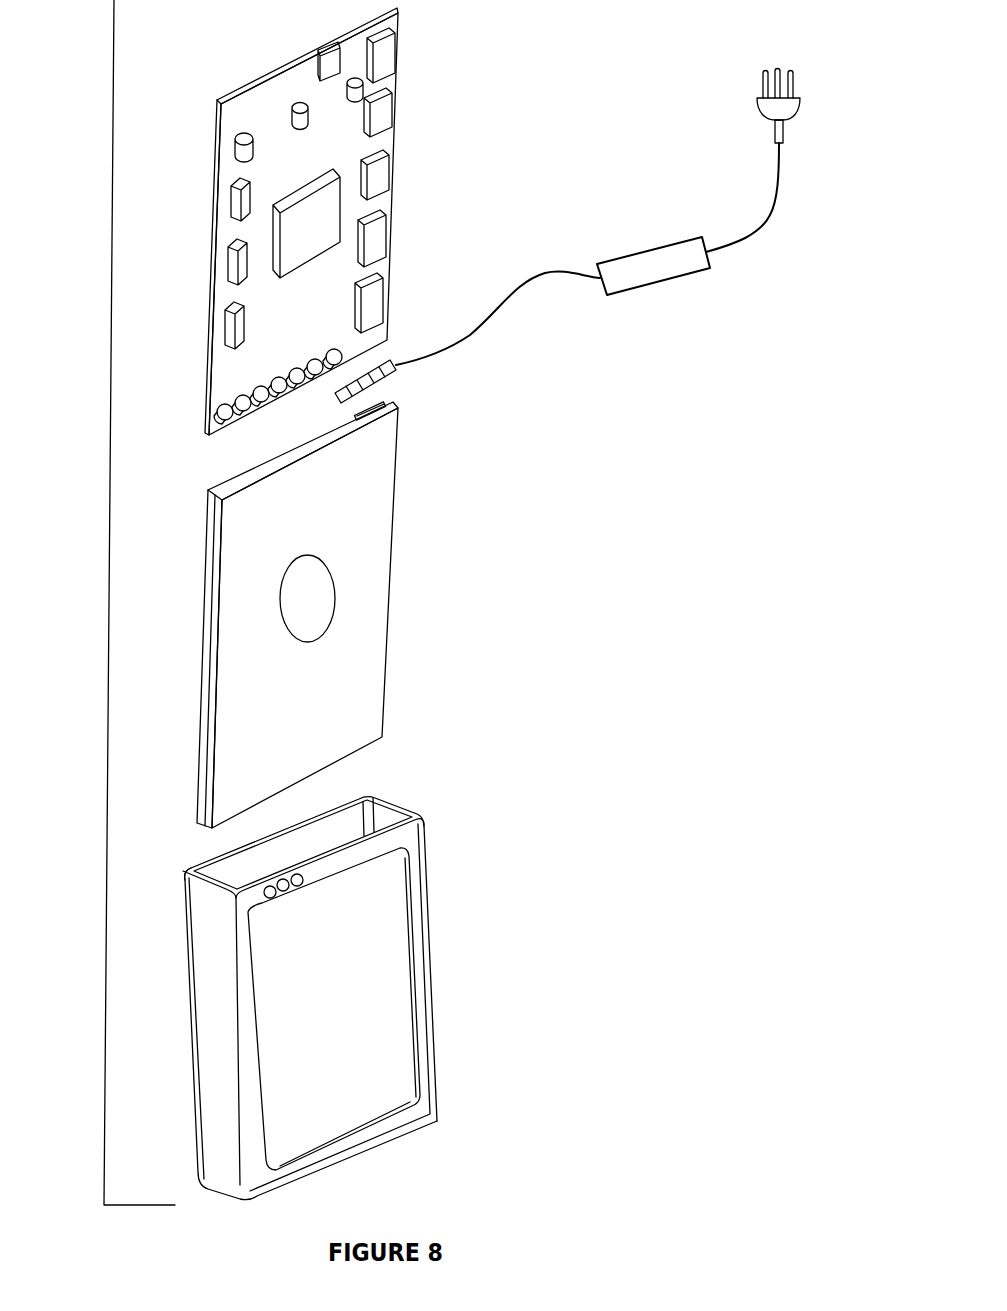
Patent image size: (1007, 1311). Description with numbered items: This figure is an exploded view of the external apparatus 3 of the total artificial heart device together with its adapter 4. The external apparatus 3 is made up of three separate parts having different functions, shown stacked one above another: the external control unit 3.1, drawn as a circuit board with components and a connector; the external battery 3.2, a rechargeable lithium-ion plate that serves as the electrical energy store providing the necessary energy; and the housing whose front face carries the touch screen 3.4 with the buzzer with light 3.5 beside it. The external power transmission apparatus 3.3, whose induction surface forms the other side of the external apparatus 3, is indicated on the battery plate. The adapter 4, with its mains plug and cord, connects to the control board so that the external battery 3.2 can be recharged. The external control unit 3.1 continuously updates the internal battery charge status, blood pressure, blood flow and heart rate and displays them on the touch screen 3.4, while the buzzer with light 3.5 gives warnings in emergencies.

The external apparatus 3 is at (108, 591).
The external control unit 3.1 is at (395, 207).
The external battery 3.2 is at (392, 593).
The external power transmission apparatus 3.3 is at (318, 588).
The touch screen 3.4 is at (397, 971).
The buzzer with light 3.5 is at (305, 878).
The adapter 4 is at (647, 258).